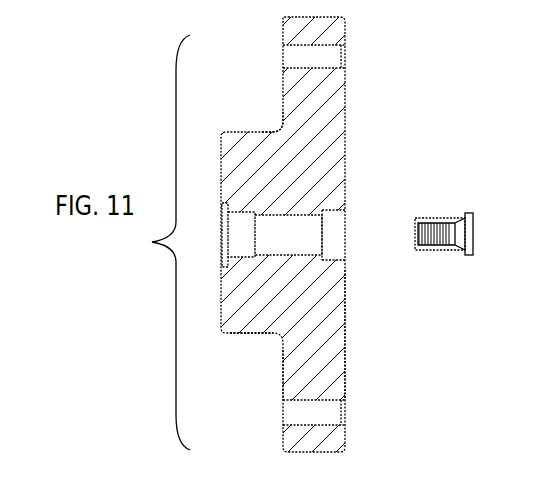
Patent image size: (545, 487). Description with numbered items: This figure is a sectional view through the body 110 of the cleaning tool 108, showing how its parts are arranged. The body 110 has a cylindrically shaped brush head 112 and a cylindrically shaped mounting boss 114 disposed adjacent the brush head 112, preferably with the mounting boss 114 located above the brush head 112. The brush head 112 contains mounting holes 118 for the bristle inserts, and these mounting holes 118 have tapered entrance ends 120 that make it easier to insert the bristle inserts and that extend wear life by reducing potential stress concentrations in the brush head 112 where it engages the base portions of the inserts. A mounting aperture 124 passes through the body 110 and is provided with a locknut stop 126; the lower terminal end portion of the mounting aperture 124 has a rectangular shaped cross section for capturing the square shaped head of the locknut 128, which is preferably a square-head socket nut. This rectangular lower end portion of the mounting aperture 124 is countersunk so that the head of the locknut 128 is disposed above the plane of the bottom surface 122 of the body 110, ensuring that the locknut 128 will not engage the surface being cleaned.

The cleaning tool 108 is at (440, 103).
The body 110 is at (258, 108).
The brush head 112 is at (300, 377).
The mounting boss 114 is at (252, 322).
The mounting holes 118 is at (330, 53).
The tapered entrance ends 120 is at (341, 68).
The bottom surface 122 is at (345, 332).
The mounting aperture 124 is at (305, 249).
The locknut stop 126 is at (323, 220).
The locknut 128 is at (453, 237).